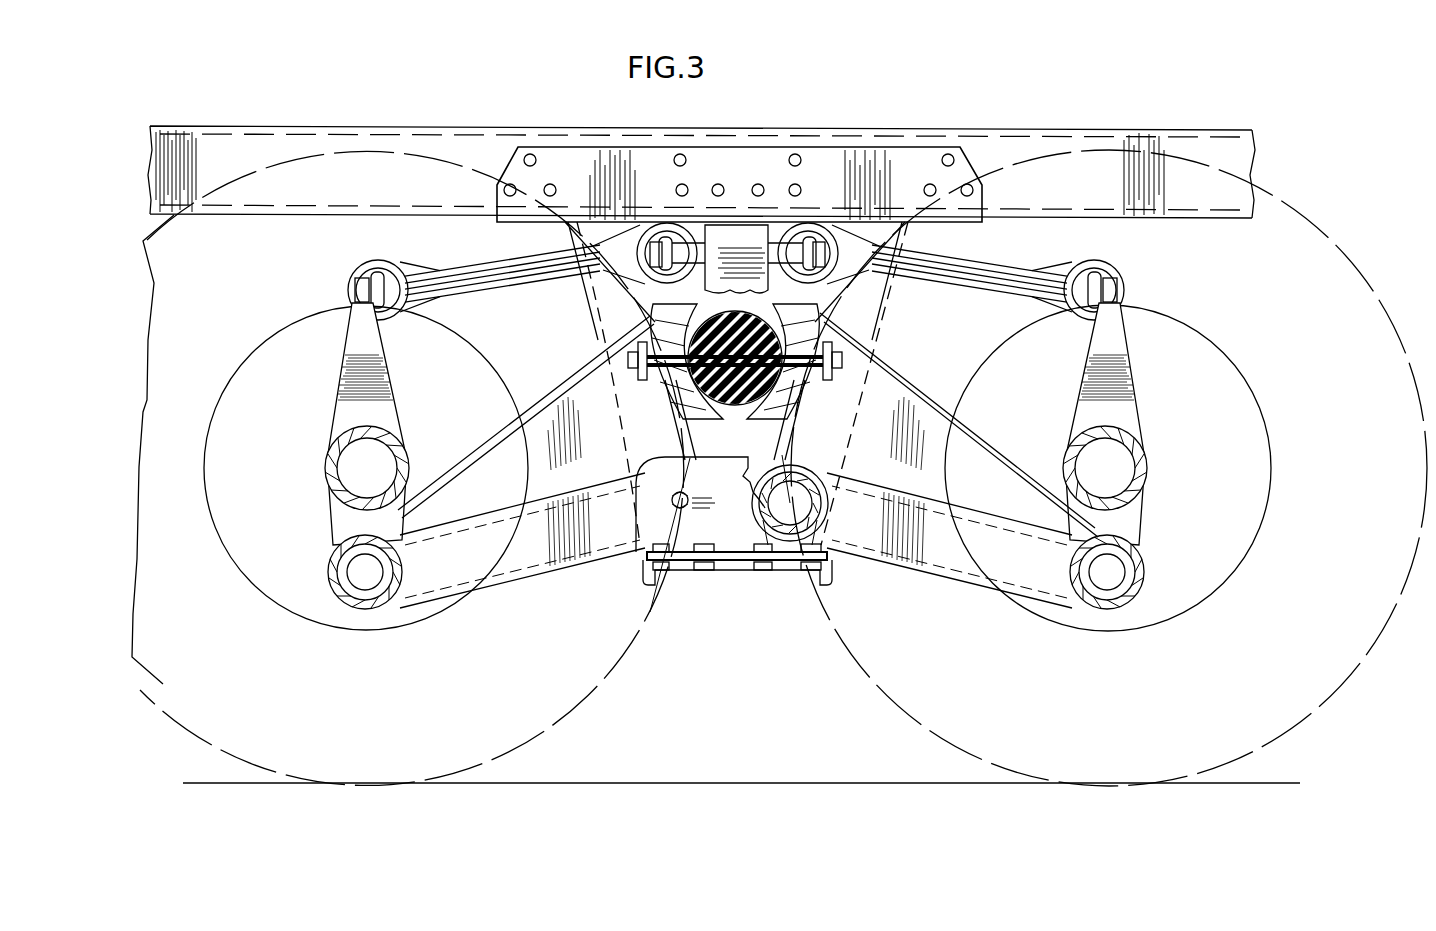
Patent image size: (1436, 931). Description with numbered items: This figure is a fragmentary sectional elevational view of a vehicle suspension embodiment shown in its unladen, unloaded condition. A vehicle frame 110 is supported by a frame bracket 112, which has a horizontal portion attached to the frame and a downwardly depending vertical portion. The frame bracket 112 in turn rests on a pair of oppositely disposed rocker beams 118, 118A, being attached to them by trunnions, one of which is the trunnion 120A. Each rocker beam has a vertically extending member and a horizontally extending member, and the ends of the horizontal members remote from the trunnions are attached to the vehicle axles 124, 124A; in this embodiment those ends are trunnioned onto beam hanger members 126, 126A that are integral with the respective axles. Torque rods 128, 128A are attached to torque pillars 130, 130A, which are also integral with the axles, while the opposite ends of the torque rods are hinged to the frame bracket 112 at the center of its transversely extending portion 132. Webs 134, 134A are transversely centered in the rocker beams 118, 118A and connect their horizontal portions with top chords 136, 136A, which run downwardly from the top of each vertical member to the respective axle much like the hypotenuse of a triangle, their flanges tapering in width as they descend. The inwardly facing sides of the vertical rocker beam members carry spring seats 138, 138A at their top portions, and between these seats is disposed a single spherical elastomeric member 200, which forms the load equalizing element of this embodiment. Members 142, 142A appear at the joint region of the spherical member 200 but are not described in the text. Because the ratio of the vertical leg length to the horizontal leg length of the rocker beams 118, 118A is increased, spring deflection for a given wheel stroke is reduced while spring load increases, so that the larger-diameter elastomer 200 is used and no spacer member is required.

The vehicle frame 110 is at (483, 142).
The frame bracket 112 is at (852, 146).
The rocker beam 118 is at (572, 580).
The rocker beam 118A is at (930, 585).
The trunnion 120A is at (790, 528).
The vehicle axle 124 is at (328, 458).
The vehicle axle 124A is at (1147, 452).
The beam hanger member 126 is at (335, 520).
The beam hanger member 126A is at (1133, 517).
The torque rod 128 is at (486, 270).
The torque rod 128A is at (997, 273).
The torque pillar 130 is at (345, 357).
The torque pillar 130A is at (1127, 355).
The transversely extending portion 132 is at (700, 288).
The web 134 is at (510, 490).
The web 134A is at (1040, 405).
The top chord 136 is at (483, 443).
The top chord 136A is at (925, 392).
The spring seat 138 is at (703, 420).
The spring seat 138A is at (775, 417).
The ball socket 142 is at (668, 388).
The ball socket 142A is at (813, 388).
The elastomeric member 200 is at (710, 317).